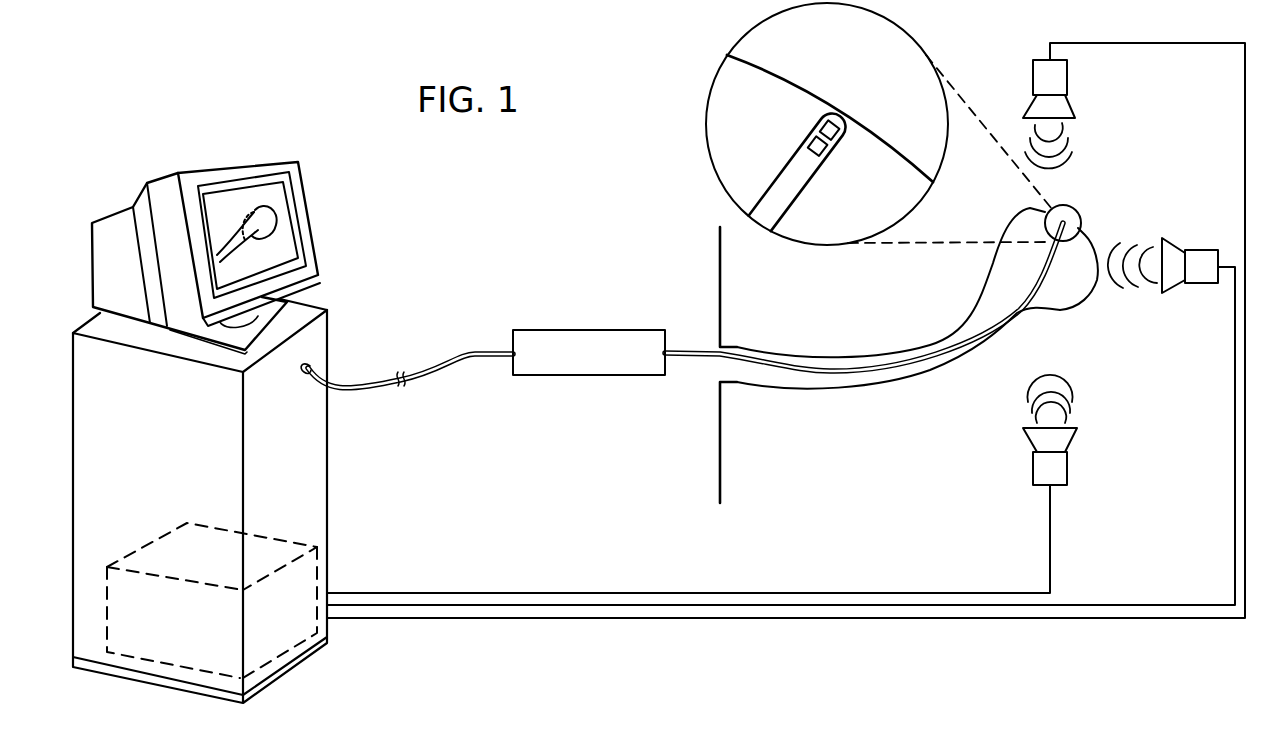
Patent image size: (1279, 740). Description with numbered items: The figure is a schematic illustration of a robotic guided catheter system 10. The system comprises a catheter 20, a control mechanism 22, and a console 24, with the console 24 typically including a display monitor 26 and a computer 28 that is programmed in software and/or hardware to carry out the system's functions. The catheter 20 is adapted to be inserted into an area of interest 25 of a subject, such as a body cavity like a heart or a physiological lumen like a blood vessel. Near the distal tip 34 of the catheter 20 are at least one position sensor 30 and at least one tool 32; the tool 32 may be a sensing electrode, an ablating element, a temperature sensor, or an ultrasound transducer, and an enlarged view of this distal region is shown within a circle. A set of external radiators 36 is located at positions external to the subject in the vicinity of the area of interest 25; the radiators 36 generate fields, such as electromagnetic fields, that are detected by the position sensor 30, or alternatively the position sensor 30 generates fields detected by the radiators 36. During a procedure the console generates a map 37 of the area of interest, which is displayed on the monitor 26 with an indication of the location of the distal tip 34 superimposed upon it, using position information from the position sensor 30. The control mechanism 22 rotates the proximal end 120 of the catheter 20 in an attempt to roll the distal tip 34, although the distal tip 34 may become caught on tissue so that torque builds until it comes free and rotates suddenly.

The robotic guided catheter system 10 is at (607, 245).
The catheter 20 is at (813, 371).
The control mechanism 22 is at (587, 330).
The console 24 is at (307, 472).
The area of interest 25 is at (1066, 310).
The display monitor 26 is at (254, 170).
The computer 28 is at (315, 557).
The position sensor 30 is at (810, 138).
The tool 32 is at (838, 110).
The distal tip 34 is at (857, 112).
The external radiators 36 is at (1033, 82).
The map 37 is at (262, 216).
The proximal end 120 is at (675, 338).